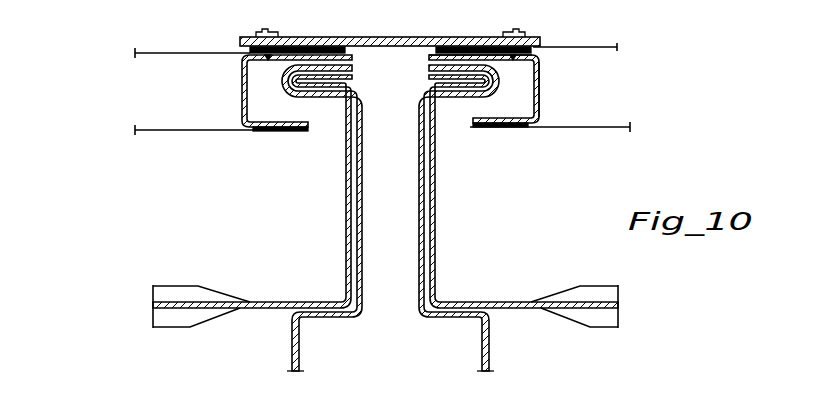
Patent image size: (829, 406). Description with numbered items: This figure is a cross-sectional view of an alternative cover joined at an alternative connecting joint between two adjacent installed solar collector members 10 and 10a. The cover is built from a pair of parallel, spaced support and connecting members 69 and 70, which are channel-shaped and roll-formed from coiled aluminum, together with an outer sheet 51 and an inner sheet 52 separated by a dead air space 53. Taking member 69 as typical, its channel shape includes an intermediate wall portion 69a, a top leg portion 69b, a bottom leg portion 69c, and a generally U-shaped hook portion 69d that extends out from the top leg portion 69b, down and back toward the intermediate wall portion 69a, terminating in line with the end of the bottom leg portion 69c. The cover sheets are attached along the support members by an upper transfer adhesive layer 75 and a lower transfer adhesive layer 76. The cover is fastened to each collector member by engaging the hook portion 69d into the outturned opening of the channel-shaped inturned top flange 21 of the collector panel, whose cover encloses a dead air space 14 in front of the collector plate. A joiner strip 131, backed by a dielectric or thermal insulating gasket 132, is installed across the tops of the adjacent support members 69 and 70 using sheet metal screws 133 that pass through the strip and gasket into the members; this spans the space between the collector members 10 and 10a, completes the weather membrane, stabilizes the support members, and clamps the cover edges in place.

The solar collector member 10 is at (550, 338).
The adjacent collector member 10a is at (148, 266).
The dead air space 14 is at (537, 239).
The inturned top flange 21 is at (444, 85).
The outer sheet 51 is at (583, 47).
The inner sheet 52 is at (560, 127).
The dead air space 53 is at (619, 101).
The left side support and connecting member 69 is at (538, 102).
The intermediate wall portion 69a is at (538, 78).
The top leg portion 69b is at (458, 46).
The bottom leg portion 69c is at (505, 128).
The hook portion 69d is at (412, 57).
The right side support and connecting member 70 is at (242, 85).
The upper transfer adhesive layer 75 is at (498, 53).
The lower transfer adhesive layer 76 is at (482, 128).
The joiner strip 131 is at (371, 36).
The gasket 132 is at (396, 52).
The sheet metal screws 133 is at (266, 31).